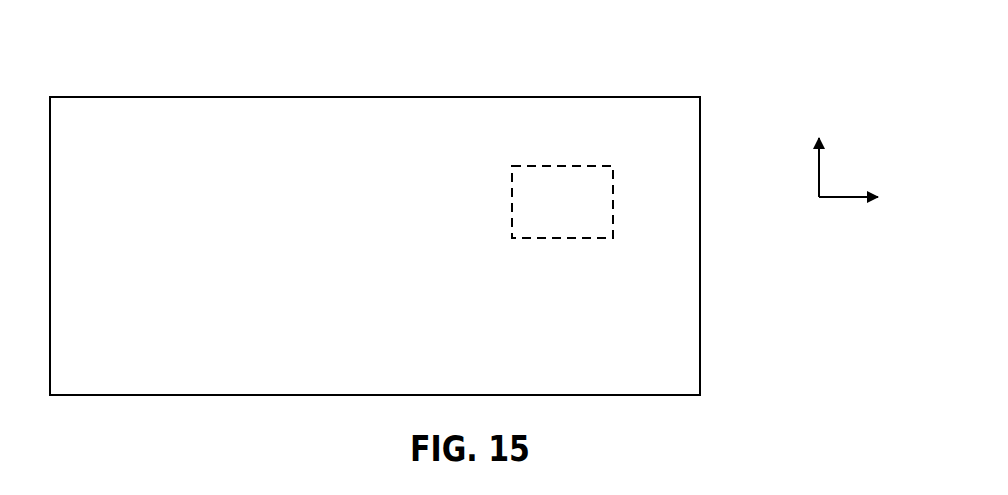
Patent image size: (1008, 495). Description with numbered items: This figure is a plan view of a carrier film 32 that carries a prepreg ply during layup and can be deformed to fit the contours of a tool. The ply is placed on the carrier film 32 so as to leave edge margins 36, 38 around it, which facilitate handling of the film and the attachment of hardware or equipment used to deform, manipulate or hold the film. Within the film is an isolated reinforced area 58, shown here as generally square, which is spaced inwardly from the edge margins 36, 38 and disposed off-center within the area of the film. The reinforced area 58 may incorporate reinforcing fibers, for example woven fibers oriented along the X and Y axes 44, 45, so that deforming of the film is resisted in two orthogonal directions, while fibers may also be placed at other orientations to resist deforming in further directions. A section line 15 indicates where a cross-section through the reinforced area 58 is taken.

The carrier film 32 is at (138, 133).
The edge margin 36 is at (441, 120).
The edge margin 38 is at (671, 305).
The reinforced area 58 is at (561, 163).
The section line 15- 15 is at (500, 230).
The Y axis 45 is at (819, 176).
The X axis 44 is at (840, 199).